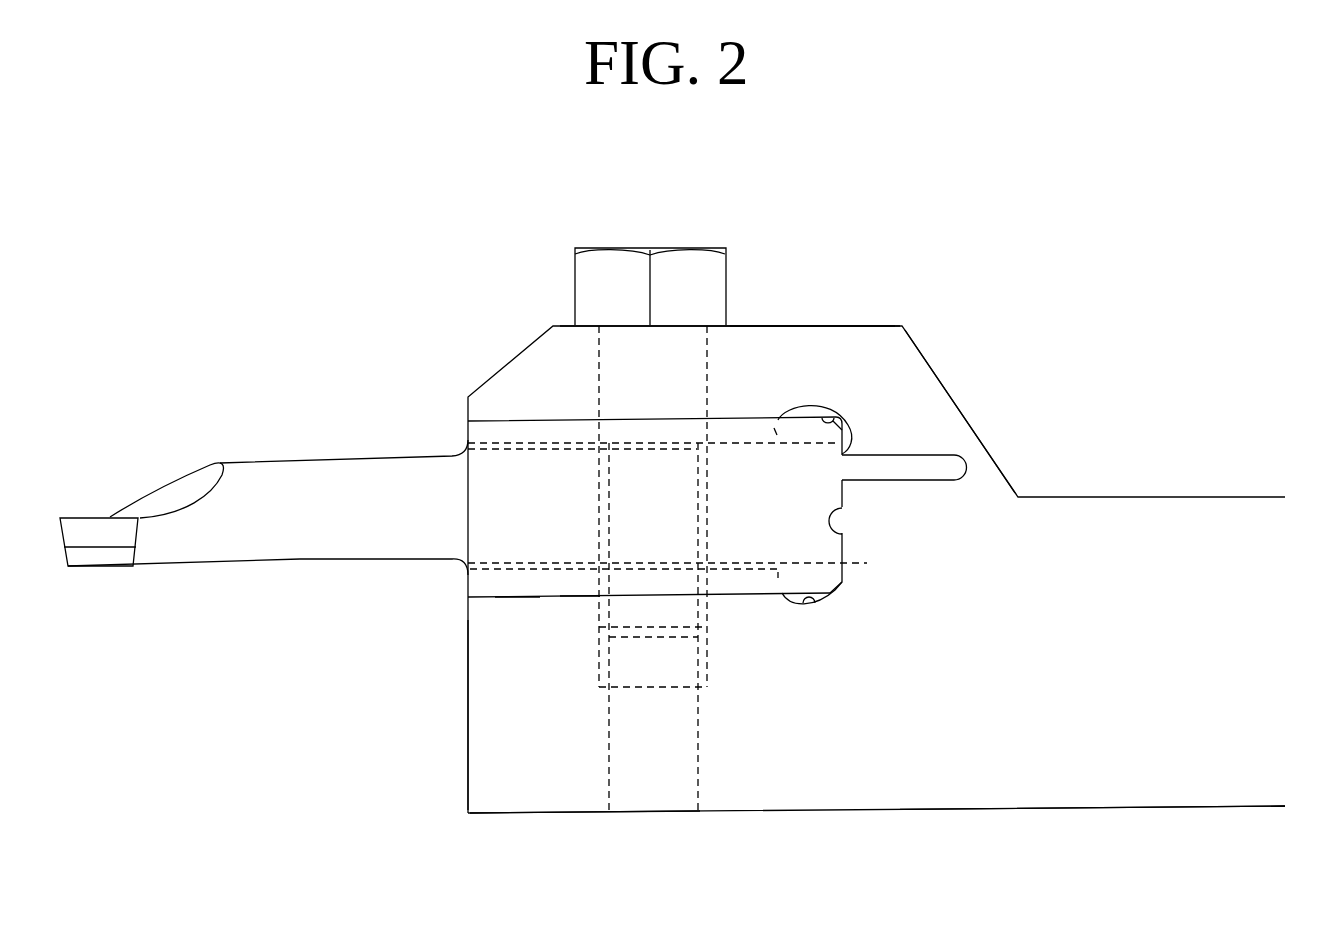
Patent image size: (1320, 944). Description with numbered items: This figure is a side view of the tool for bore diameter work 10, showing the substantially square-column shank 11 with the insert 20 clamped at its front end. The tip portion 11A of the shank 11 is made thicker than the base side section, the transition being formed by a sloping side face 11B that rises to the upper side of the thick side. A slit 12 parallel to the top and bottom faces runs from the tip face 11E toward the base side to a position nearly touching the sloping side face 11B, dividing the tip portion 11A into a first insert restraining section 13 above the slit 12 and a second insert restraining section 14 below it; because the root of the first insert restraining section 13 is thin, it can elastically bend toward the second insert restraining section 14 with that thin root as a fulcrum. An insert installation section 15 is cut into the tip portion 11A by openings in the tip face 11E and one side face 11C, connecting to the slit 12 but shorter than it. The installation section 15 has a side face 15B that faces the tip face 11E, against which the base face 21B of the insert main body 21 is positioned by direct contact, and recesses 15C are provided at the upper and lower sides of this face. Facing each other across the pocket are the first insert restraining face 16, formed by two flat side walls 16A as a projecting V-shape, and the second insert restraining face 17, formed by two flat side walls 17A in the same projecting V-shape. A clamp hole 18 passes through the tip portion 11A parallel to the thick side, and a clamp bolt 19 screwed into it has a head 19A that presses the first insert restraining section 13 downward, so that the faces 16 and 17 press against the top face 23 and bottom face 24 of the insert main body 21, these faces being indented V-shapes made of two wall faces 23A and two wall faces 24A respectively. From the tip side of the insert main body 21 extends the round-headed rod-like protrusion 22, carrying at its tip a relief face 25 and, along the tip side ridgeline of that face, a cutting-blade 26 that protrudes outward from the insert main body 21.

The tool for bore diameter work 10 is at (1015, 215).
The shank 11 is at (1143, 490).
The tip portion 11A is at (842, 312).
The sloping side face 11B is at (978, 417).
The one side face 11C is at (896, 716).
The tip face 11E is at (468, 722).
The slit 12 is at (915, 465).
The first insert restraining section 13 is at (755, 343).
The second insert restraining section 14 is at (553, 781).
The insert installation section 15 is at (456, 437).
The side face 15B is at (842, 533).
The recesses 15C is at (827, 413).
The first insert restraining face 16 is at (532, 420).
The side walls 16A is at (502, 429).
The second insert restraining face 17 is at (477, 612).
The side walls 17A is at (484, 584).
The clamp hole 18 is at (608, 768).
The clamp bolt 19 is at (653, 240).
The head 19A is at (607, 261).
The insert 20 is at (265, 428).
The insert main body 21 is at (456, 590).
The base face 21B is at (842, 492).
The protrusion 22 is at (189, 580).
The top face 23 is at (583, 422).
The wall faces 23A is at (567, 433).
The bottom face 24 is at (575, 600).
The wall faces 24A is at (513, 593).
The relief face 25 is at (84, 517).
The cutting-blade 26 is at (60, 518).